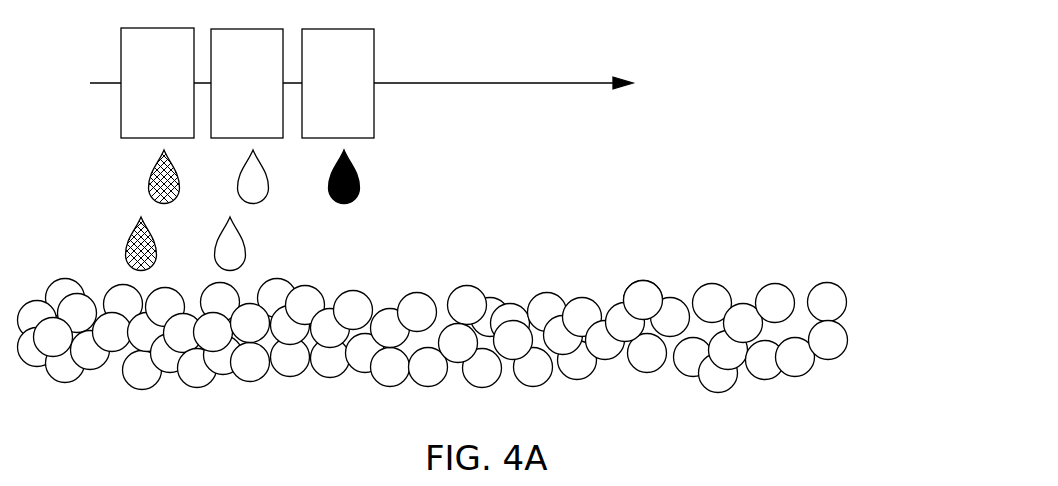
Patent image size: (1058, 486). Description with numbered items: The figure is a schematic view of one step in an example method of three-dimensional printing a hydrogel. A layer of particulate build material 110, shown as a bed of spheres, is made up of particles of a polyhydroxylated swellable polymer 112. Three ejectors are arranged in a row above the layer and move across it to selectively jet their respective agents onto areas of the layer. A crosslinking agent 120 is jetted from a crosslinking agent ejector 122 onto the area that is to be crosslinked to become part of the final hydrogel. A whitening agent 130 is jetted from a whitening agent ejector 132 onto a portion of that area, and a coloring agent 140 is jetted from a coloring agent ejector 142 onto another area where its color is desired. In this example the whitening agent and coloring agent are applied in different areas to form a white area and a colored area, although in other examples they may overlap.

The particulate build material 110 is at (863, 323).
The polyhydroxylated swellable polymer 112 is at (645, 293).
The crosslinking agent 120 is at (150, 193).
The crosslinking agent ejector 122 is at (138, 94).
The whitening agent 130 is at (235, 250).
The whitening agent ejector 132 is at (228, 94).
The coloring agent 140 is at (358, 173).
The coloring agent ejector 142 is at (319, 94).